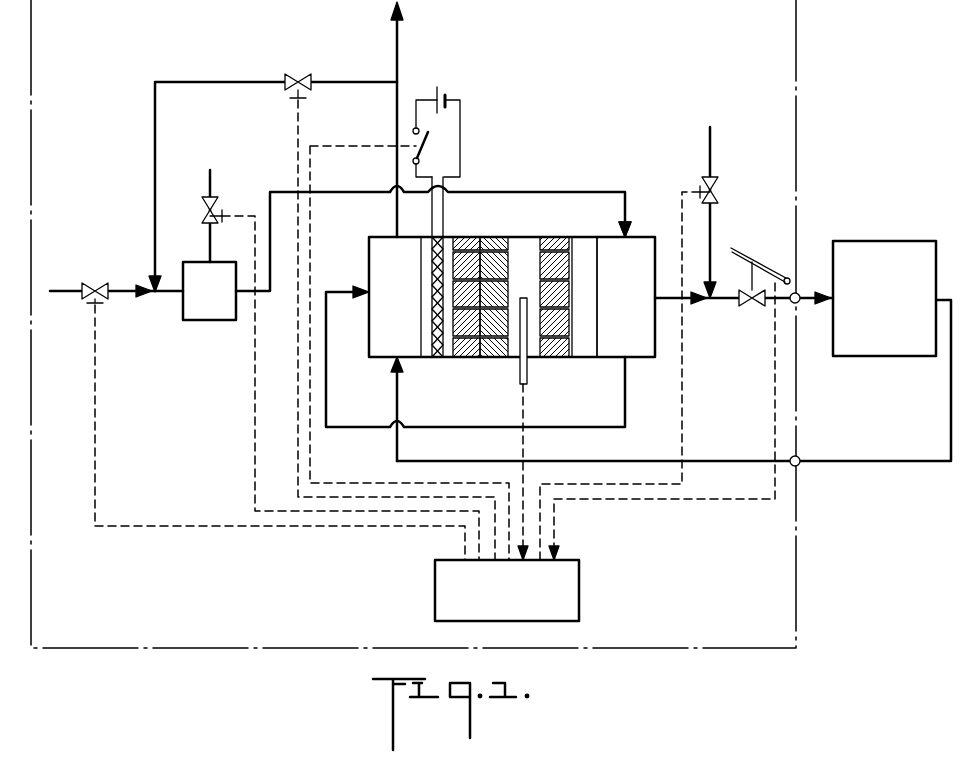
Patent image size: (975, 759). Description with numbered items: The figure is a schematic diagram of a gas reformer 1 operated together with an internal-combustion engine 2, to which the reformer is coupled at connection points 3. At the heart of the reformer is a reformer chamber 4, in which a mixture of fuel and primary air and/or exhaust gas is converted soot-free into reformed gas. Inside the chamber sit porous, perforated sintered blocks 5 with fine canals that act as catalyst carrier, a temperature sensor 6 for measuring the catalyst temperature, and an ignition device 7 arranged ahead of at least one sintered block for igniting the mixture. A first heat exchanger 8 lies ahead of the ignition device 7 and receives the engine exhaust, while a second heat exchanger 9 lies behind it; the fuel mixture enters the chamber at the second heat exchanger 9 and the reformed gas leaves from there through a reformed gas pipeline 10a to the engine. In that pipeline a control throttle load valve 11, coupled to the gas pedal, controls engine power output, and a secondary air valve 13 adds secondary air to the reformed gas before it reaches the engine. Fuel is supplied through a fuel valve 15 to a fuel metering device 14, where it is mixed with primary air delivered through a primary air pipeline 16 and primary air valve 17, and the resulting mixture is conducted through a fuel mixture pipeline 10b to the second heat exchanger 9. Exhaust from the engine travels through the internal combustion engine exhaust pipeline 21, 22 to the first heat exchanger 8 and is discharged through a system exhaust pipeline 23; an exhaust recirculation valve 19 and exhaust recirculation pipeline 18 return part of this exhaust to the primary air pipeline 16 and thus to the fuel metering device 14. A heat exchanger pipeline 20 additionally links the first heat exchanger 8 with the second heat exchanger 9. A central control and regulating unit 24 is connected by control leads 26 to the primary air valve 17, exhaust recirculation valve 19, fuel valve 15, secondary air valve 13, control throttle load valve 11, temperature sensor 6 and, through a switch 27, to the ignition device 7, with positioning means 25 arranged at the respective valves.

The gas reformer 1 is at (797, 118).
The internal-combustion engine 2 is at (886, 240).
The connection points 3 is at (798, 303).
The reformer chamber 4 is at (636, 236).
The sintered blocks 5 is at (490, 358).
The temperature sensor 6 is at (524, 298).
The ignition device 7 is at (432, 358).
The first heat exchanger 8 is at (372, 245).
The second heat exchanger 9 is at (640, 358).
The reformed gas pipeline 10a is at (706, 300).
The fuel mixture pipeline 10b is at (584, 192).
The control throttle load valve 11 is at (749, 303).
The secondary air valve 13 is at (716, 186).
The fuel metering device 14 is at (208, 322).
The fuel valve 15 is at (204, 205).
The primary air pipeline 16 is at (159, 294).
The primary air valve 17 is at (92, 283).
The exhaust recirculation pipeline 18 is at (153, 168).
The exhaust recirculation valve 19 is at (292, 75).
The heat exchanger pipeline 20 is at (625, 428).
The internal combustion engine exhaust pipeline 21 is at (397, 460).
The internal combustion engine exhaust pipeline 22 is at (862, 463).
The system exhaust pipeline 23 is at (400, 38).
The central control and regulating unit 24 is at (522, 603).
The positioning means 25 is at (224, 212).
The control leads 26 is at (297, 448).
The switch 27 is at (432, 136).